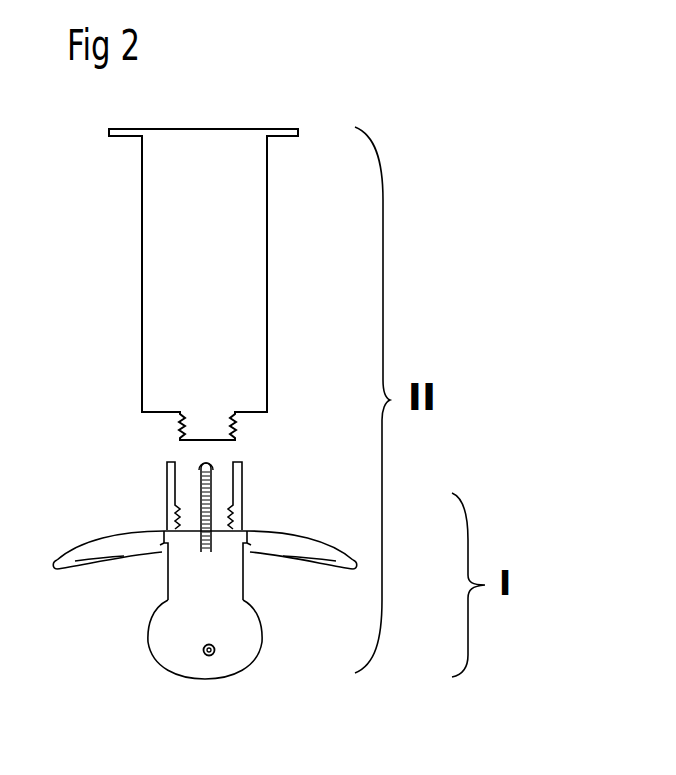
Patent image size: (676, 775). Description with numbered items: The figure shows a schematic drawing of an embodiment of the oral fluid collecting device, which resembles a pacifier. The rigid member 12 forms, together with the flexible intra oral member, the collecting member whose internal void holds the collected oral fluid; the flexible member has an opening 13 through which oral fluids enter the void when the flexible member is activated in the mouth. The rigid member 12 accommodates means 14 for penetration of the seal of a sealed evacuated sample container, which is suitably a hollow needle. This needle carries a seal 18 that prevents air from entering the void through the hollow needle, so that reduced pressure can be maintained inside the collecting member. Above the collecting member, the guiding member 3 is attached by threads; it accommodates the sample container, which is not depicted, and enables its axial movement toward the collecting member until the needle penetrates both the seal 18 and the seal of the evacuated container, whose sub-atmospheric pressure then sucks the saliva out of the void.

The guiding member 3 is at (268, 322).
The rigid member 12 is at (275, 535).
The opening 13 is at (217, 657).
The means for penetration 14 is at (217, 488).
The seal 18 is at (197, 465).